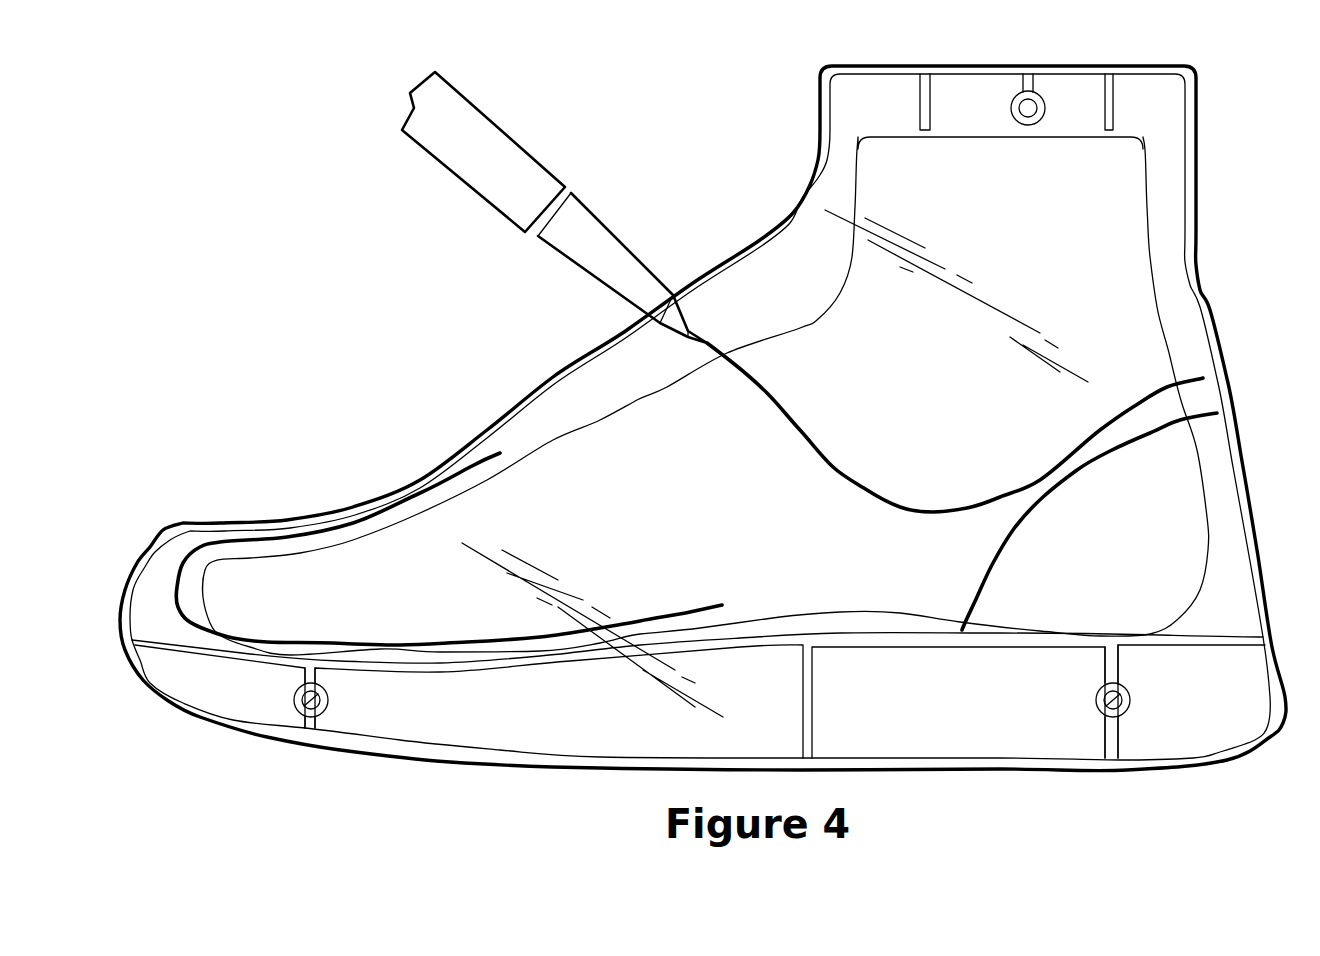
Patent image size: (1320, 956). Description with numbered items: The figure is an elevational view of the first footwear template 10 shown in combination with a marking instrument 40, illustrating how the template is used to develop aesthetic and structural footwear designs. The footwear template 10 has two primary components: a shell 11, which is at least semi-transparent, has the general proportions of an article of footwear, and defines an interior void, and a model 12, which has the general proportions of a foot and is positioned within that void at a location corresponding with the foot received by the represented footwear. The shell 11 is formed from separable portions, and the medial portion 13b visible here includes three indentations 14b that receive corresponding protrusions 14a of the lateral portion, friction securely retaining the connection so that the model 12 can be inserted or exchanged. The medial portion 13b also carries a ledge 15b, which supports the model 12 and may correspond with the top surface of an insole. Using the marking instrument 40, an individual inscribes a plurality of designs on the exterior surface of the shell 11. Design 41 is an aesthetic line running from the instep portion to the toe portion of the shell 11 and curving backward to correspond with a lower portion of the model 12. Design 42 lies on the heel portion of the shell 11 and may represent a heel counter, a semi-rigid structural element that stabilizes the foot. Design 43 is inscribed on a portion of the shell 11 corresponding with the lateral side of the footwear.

The footwear template 10 is at (410, 280).
The shell 11 is at (485, 427).
The model 12 is at (809, 316).
The medial portion 13b is at (848, 102).
The protrusions 14a is at (318, 707).
The indentations 14b is at (298, 699).
The ledge 15b is at (1180, 637).
The marking instrument 40 is at (515, 135).
The design 41 is at (670, 615).
The design 42 is at (996, 552).
The design 43 is at (945, 508).